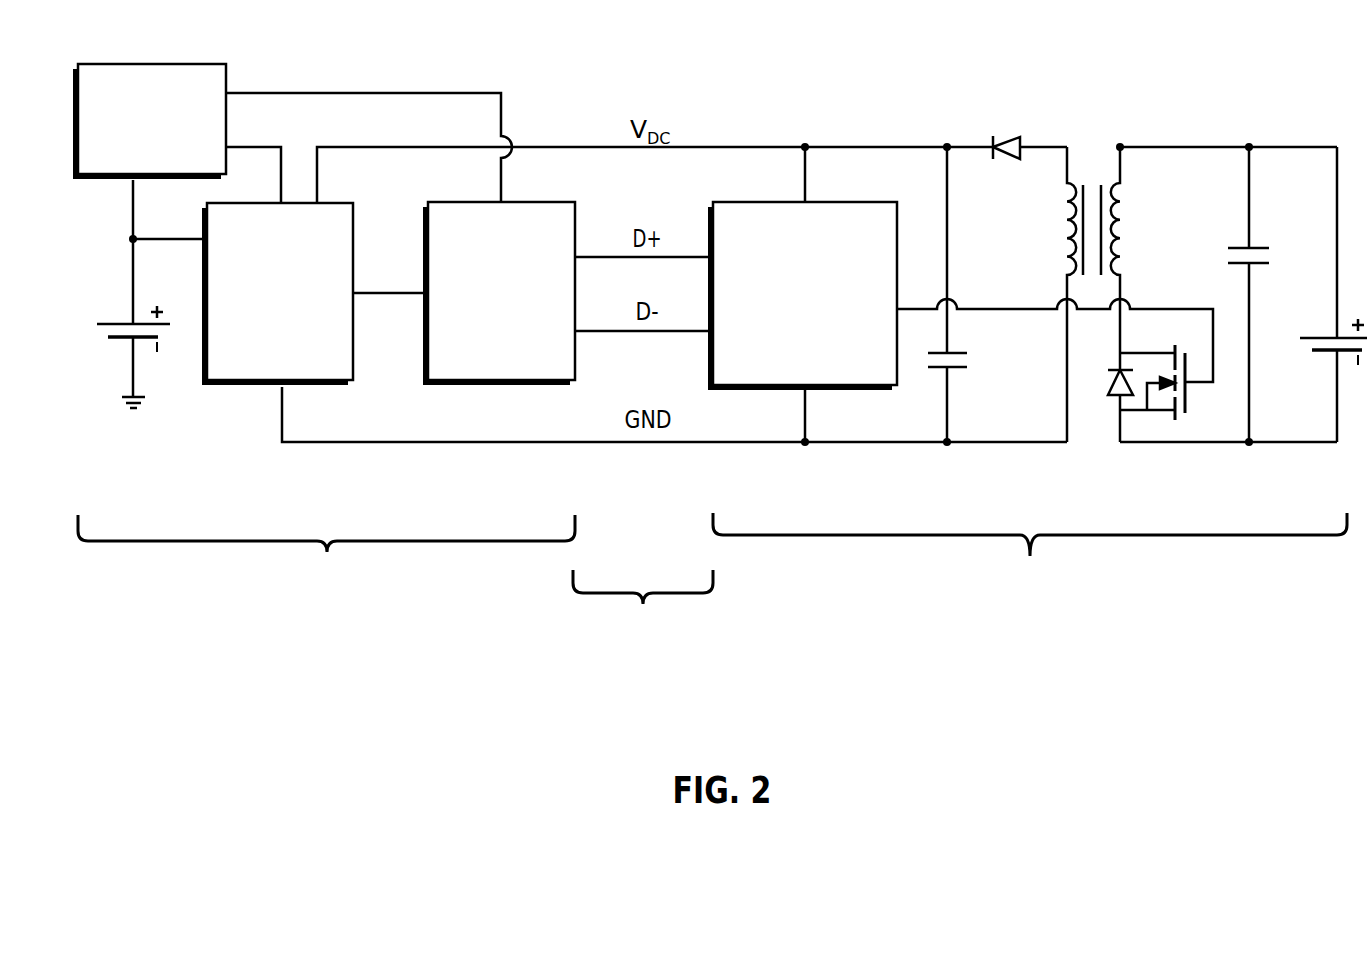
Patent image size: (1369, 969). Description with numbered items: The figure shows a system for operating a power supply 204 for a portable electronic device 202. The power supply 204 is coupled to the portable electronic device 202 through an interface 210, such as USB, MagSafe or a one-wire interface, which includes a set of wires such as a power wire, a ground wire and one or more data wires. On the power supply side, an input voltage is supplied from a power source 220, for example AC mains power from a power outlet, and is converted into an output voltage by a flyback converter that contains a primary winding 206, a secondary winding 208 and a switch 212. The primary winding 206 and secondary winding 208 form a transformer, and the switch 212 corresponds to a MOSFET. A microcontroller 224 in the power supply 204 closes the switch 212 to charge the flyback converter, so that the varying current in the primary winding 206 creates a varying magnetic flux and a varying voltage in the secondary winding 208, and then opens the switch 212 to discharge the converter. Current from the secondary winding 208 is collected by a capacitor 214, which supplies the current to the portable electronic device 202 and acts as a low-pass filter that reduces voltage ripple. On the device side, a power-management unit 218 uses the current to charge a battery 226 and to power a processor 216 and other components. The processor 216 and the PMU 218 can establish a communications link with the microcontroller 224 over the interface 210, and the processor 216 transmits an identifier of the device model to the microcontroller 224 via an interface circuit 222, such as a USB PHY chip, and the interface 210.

The portable electronic device 202 is at (326, 581).
The power supply 204 is at (1030, 567).
The primary winding 206 is at (1140, 256).
The secondary winding 208 is at (1059, 294).
The interface 210 is at (643, 620).
The switch 212 is at (1146, 382).
The capacitor 214 is at (974, 294).
The processor 216 is at (149, 121).
The power-management unit (PMU) 218 is at (277, 294).
The power source 220 is at (1320, 294).
The interface circuit 222 is at (499, 293).
The microcontroller 224 is at (802, 296).
The battery 226 is at (137, 294).